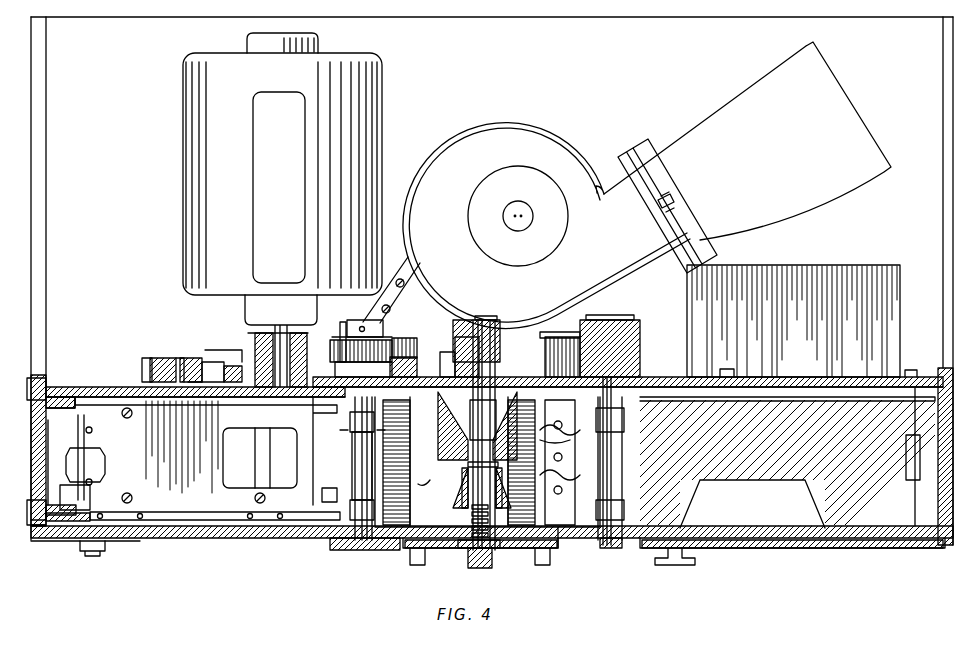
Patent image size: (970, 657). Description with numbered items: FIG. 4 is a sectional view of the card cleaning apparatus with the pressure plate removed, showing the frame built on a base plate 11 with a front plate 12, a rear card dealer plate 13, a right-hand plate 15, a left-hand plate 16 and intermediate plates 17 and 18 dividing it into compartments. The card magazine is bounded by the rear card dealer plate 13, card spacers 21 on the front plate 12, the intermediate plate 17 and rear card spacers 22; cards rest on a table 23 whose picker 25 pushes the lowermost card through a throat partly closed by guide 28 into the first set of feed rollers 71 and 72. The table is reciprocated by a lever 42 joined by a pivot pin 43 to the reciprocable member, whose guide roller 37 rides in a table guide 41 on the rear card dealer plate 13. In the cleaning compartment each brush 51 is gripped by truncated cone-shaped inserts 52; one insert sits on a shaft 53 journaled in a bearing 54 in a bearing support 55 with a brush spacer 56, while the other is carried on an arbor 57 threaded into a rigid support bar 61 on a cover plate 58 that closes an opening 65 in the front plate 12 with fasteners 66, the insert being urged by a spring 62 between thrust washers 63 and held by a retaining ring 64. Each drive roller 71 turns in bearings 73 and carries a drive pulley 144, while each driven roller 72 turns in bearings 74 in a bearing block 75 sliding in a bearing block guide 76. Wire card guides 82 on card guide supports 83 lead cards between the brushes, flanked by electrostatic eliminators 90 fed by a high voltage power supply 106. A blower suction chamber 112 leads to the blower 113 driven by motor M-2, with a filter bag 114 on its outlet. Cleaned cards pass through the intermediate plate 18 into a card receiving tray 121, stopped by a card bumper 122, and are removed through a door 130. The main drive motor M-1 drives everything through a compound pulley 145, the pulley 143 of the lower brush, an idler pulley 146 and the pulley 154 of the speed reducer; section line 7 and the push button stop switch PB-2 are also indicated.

The base plate 11 is at (625, 16).
The front plate 12 is at (158, 540).
The rear card dealer plate 13 is at (70, 386).
The right-hand plate 15 is at (942, 207).
The left-hand plate 16 is at (46, 219).
The intermediate plate 17 is at (338, 444).
The intermediate frame plate 18 is at (624, 477).
The card spacers 21 is at (34, 519).
The rear card spacers 22 is at (37, 409).
The table 23 is at (116, 386).
The picker 25 is at (82, 423).
The guide 28 is at (324, 488).
The guide roller 37 is at (218, 366).
The table guide 41 is at (187, 358).
The lever 42 is at (96, 447).
The pivot pin 43 is at (66, 465).
The brush 51 is at (410, 439).
The truncated cone-shaped insert 52 is at (466, 439).
The shaft 53 is at (478, 322).
The bearing 54 is at (417, 360).
The bearing support 55 is at (546, 350).
The brush spacer 56 is at (487, 422).
The arbor 57 is at (486, 462).
The cover plate 58 is at (466, 542).
The rigid support bar 61 is at (484, 568).
The spring 62 is at (496, 548).
The thrust washer 63 is at (488, 486).
The retaining ring 64 is at (492, 473).
The opening 65 is at (578, 540).
The fastener 66 is at (418, 566).
The drive roller 71 is at (602, 406).
The driven roller 72 is at (369, 414).
The bearing 73 is at (608, 548).
The bearing 74 is at (352, 548).
The bearing block 75 is at (350, 323).
The bearing block guide 76 is at (340, 339).
The wire card guide 82 is at (467, 476).
The card guide support 83 is at (575, 474).
The electrostatic eliminator 90 is at (332, 459).
The high voltage power supply 106 is at (840, 265).
The blower suction chamber 112 is at (399, 276).
The blower 113 is at (564, 142).
The filter bag 114 is at (850, 184).
The card receiving tray 121 is at (870, 533).
The card bumper 122 is at (905, 446).
The door 130 is at (699, 550).
The pulley 143 is at (456, 338).
The drive pulley 144 is at (376, 328).
The compound pulley 145 is at (256, 334).
The idler pulley 146 is at (568, 333).
The pulley 154 is at (168, 358).
The section line 7 is at (623, 315).
The main drive motor M-1 is at (370, 88).
The motor M-2 is at (568, 221).
The push button stop switch PB-2 is at (102, 546).